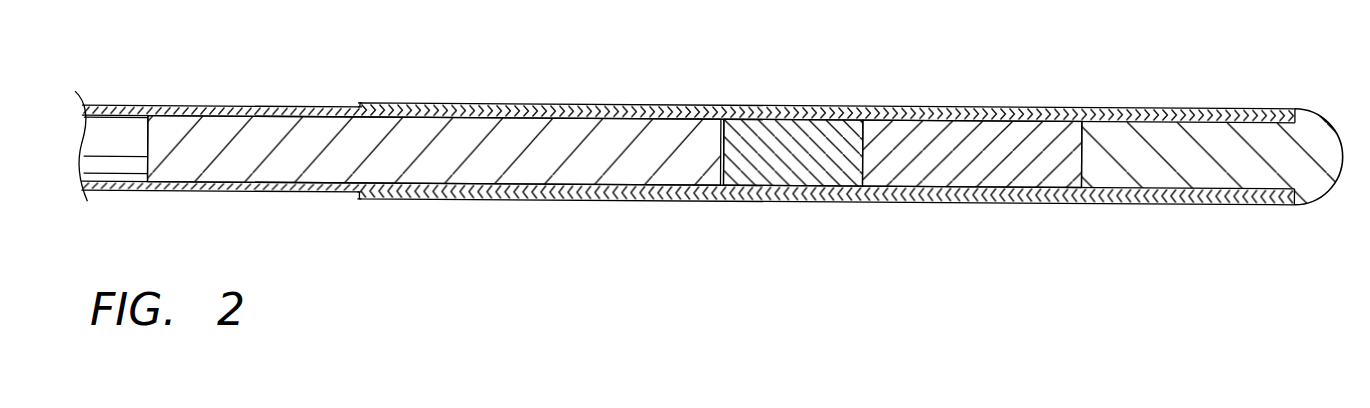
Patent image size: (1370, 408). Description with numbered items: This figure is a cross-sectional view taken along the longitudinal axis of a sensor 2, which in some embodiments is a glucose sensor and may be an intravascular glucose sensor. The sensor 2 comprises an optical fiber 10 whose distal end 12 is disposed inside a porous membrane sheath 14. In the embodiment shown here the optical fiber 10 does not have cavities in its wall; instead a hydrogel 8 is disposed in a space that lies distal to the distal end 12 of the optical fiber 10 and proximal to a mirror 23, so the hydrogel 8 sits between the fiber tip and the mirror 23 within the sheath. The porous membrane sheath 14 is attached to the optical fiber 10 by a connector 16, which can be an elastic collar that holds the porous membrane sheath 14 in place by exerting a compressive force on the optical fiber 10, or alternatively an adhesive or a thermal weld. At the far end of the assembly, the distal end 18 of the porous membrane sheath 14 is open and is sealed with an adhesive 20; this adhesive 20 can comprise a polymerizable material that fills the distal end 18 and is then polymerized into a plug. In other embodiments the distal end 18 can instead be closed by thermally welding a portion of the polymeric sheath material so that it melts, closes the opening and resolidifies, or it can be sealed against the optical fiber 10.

The sensor 2 is at (278, 203).
The hydrogel 8 is at (790, 137).
The optical fiber 10 is at (110, 102).
The distal end 12 is at (755, 195).
The porous membrane sheath 14 is at (522, 100).
The connector 16 is at (355, 102).
The distal end 18 is at (1318, 112).
The adhesive 20 is at (1237, 167).
The mirror 23 is at (965, 158).